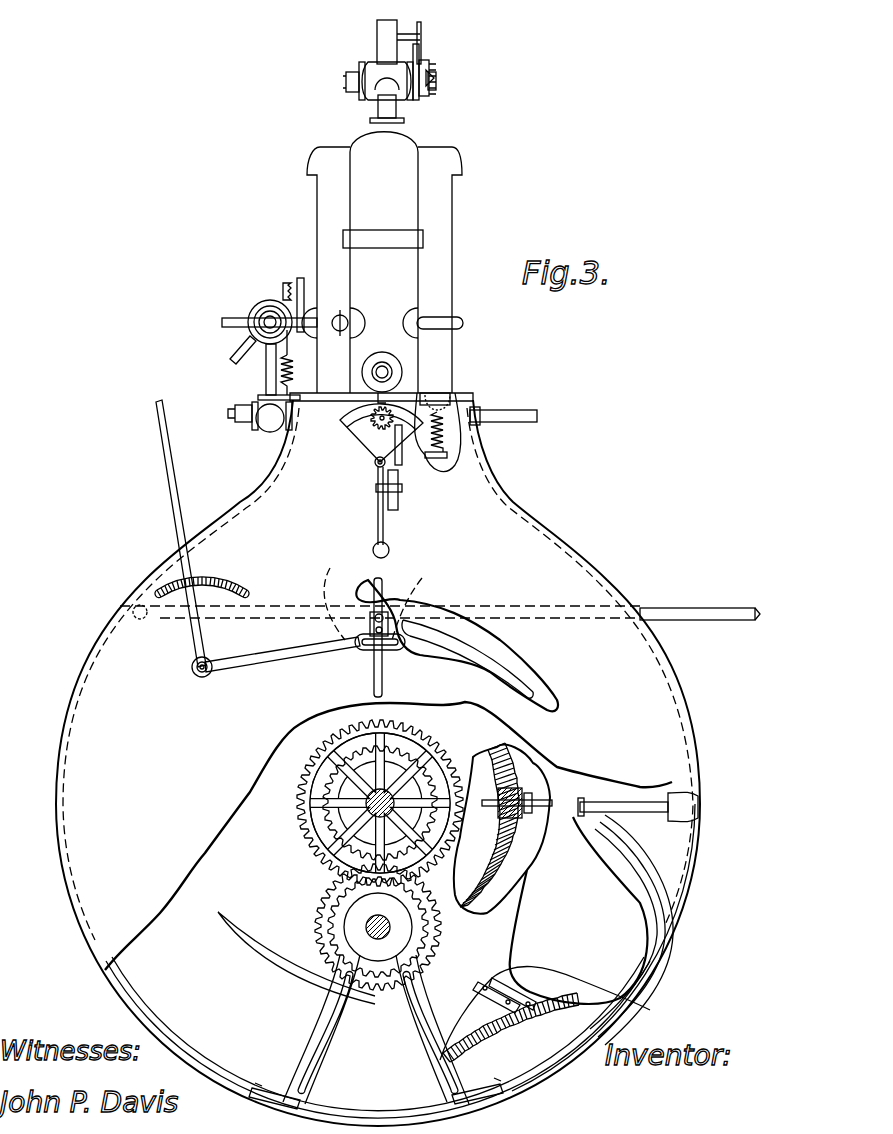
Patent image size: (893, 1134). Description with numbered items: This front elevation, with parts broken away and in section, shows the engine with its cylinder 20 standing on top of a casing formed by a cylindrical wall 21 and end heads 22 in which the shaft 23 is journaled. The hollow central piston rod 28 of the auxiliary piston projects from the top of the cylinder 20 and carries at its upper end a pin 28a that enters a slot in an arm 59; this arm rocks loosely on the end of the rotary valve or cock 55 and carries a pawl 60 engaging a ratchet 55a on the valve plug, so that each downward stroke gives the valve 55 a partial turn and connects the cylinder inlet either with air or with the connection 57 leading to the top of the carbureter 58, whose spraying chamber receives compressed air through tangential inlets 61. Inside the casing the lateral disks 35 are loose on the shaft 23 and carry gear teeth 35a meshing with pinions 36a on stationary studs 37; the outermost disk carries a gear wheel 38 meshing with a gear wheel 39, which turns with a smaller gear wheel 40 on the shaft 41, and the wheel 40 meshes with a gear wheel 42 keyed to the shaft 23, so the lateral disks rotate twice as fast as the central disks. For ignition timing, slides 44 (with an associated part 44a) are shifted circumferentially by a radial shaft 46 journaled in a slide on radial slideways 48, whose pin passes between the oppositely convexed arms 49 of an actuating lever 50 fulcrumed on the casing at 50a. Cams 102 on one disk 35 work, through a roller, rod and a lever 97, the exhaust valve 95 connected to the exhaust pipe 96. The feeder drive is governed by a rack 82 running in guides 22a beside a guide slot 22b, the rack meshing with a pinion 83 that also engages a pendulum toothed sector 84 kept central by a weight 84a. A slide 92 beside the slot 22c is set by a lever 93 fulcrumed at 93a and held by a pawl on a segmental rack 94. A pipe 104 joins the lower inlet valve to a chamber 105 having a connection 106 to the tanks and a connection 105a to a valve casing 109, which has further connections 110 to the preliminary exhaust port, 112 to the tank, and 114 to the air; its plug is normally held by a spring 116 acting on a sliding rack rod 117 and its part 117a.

The cylinder 20 is at (452, 224).
The cylindrical wall 21 is at (672, 945).
The end wall or head 22 is at (90, 866).
The guides 22a is at (398, 498).
The guide slot 22b is at (400, 472).
The slot 22c is at (374, 686).
The shaft 23 is at (385, 790).
The central piston rod 28 is at (385, 44).
The pin 28a is at (421, 37).
The lateral disks 35 is at (388, 853).
The gear teeth 35a is at (508, 870).
The pinions 36a is at (535, 800).
The stationary studs 37 is at (640, 814).
The gear wheel 38 is at (305, 828).
The gear wheel 39 is at (436, 950).
The smaller gear wheel 40 is at (328, 924).
The shaft 41 is at (378, 916).
The gear wheel 42 is at (316, 862).
The slides 44 is at (598, 1012).
The guide rail 44a is at (600, 1026).
The radial shaft 46 is at (492, 1002).
The radial slideways 48 is at (476, 984).
The oppositely convexed arms 49 is at (334, 622).
The actuating lever 50 is at (670, 610).
The fulcrum 50a is at (142, 620).
The rotary valve or cock 55 is at (346, 82).
The ratchet 55a is at (436, 88).
The connection 57 is at (397, 108).
The carbureter 58 is at (383, 262).
The arm 59 is at (420, 45).
The pawl 60 is at (430, 66).
The inlets 61 is at (466, 314).
The rack 82 is at (375, 455).
The pinion 83 is at (370, 426).
The toothed sector 84 is at (358, 412).
The weight 84a is at (375, 548).
The slide 92 is at (396, 636).
The lever 93 is at (168, 468).
The fulcrum 93a is at (206, 676).
The segmental rack 94 is at (222, 580).
The exhaust valve 95 is at (447, 398).
The exhaust pipe 96 is at (500, 412).
The lever 97 is at (440, 458).
The cams 102 is at (525, 688).
The pipe 104 is at (275, 428).
The chamber 105 is at (258, 420).
The connection 105a is at (266, 374).
The connection 106 is at (237, 405).
The valve casing 109 is at (262, 305).
The connection 110 is at (304, 297).
The connection 112 is at (235, 345).
The connection 114 is at (224, 320).
The spring 116 is at (292, 380).
The vertically sliding rod 117 is at (306, 342).
The ratchet 117a is at (284, 283).